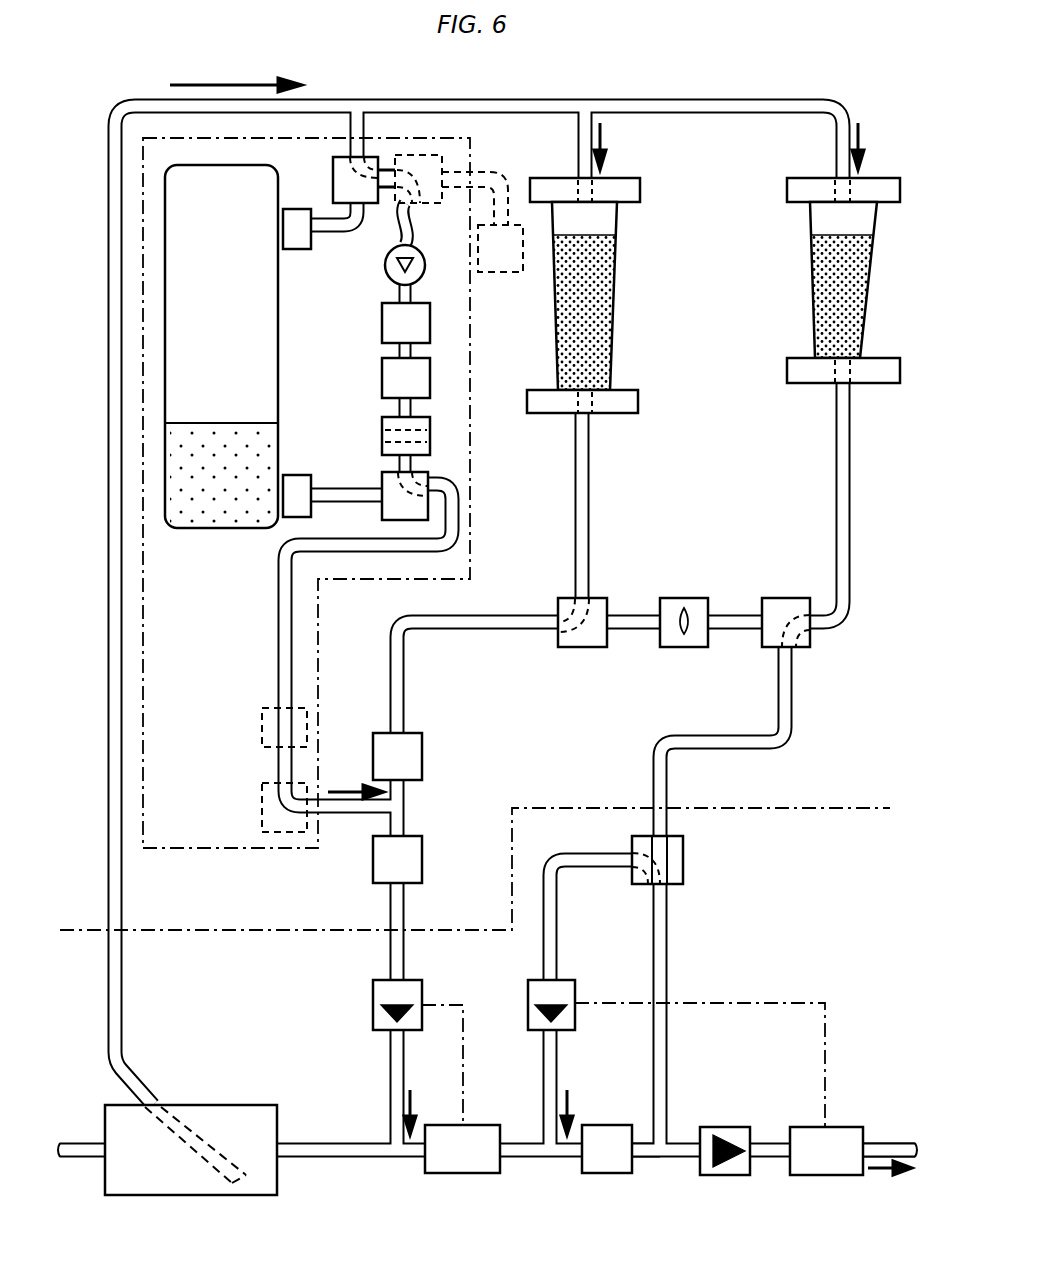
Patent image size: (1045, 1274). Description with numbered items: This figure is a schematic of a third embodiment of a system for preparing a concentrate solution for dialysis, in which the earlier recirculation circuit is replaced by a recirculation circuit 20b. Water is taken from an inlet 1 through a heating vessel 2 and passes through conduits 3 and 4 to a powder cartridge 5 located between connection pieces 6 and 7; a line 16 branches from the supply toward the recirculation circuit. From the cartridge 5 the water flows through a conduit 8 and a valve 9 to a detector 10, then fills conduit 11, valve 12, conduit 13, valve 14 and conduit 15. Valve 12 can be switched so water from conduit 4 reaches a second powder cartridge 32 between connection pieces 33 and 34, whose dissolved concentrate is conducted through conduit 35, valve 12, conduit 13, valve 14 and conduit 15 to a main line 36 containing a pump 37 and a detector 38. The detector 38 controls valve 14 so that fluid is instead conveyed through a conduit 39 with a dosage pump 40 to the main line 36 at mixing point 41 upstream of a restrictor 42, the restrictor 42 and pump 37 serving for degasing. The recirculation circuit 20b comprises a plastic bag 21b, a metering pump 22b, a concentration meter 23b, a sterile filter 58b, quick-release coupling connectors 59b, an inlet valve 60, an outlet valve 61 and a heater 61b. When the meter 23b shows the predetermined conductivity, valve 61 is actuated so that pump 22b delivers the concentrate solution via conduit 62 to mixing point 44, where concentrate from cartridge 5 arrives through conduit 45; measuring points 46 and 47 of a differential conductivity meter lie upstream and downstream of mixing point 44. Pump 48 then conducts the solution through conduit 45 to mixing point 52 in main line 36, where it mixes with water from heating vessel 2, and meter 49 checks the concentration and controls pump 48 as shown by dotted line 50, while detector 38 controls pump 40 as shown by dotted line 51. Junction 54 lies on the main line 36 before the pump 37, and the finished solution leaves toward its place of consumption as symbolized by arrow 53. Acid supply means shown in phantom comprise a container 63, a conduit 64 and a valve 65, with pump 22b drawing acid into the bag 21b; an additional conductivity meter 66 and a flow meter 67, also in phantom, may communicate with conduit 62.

The inlet 1 is at (85, 1158).
The heating vessel 2 is at (216, 1105).
The conduit 3 is at (122, 905).
The conduit 4 is at (543, 105).
The powder cartridge 5 is at (614, 330).
The connection piece 6 is at (625, 180).
The connection piece 7 is at (630, 390).
The conduit 8 is at (590, 500).
The valve 9 is at (605, 598).
The detector 10 is at (662, 647).
The conduit 11 is at (727, 614).
The valve 12 is at (790, 598).
The conduit 13 is at (793, 695).
The valve 14 is at (683, 843).
The conduit 15 is at (668, 1068).
The null 16 is at (360, 107).
The recirculation circuit 20b is at (138, 584).
The plastic bag 21b is at (165, 340).
The metering pump 22b is at (390, 276).
The concentration meter 23b is at (382, 378).
The powder cartridge 32 is at (868, 300).
The connection piece 33 is at (880, 180).
The connection piece 34 is at (880, 358).
The conduit 35 is at (851, 495).
The main line 36 is at (340, 1143).
The pump 37 is at (713, 1175).
The detector 38 is at (821, 1175).
The conduit 39 is at (558, 930).
The dosage pump 40 is at (575, 985).
The mixing point 41 is at (547, 1157).
The restrictor 42 is at (598, 1173).
The mixing point 44 is at (398, 808).
The conduit 45 is at (405, 682).
The measuring point 46 is at (422, 740).
The measuring point 47 is at (373, 870).
The pump 48 is at (422, 985).
The meter 49 is at (456, 1173).
The dotted line 50 is at (464, 1072).
The dotted line 51 is at (826, 1030).
The mixing point 52 is at (397, 1157).
The arrow 53 is at (888, 1143).
The junction 54 is at (655, 1157).
The sterile filter 58b is at (430, 437).
The coupling connectors 59b is at (295, 250).
The inlet valve 60 is at (333, 178).
The outlet valve 61 is at (430, 478).
The heater 61b is at (382, 320).
The conduit 62 is at (279, 625).
The container 63 is at (520, 272).
The conduit 64 is at (504, 185).
The valve 65 is at (430, 155).
The conductivity meter 66 is at (262, 722).
The flow meter 67 is at (262, 800).